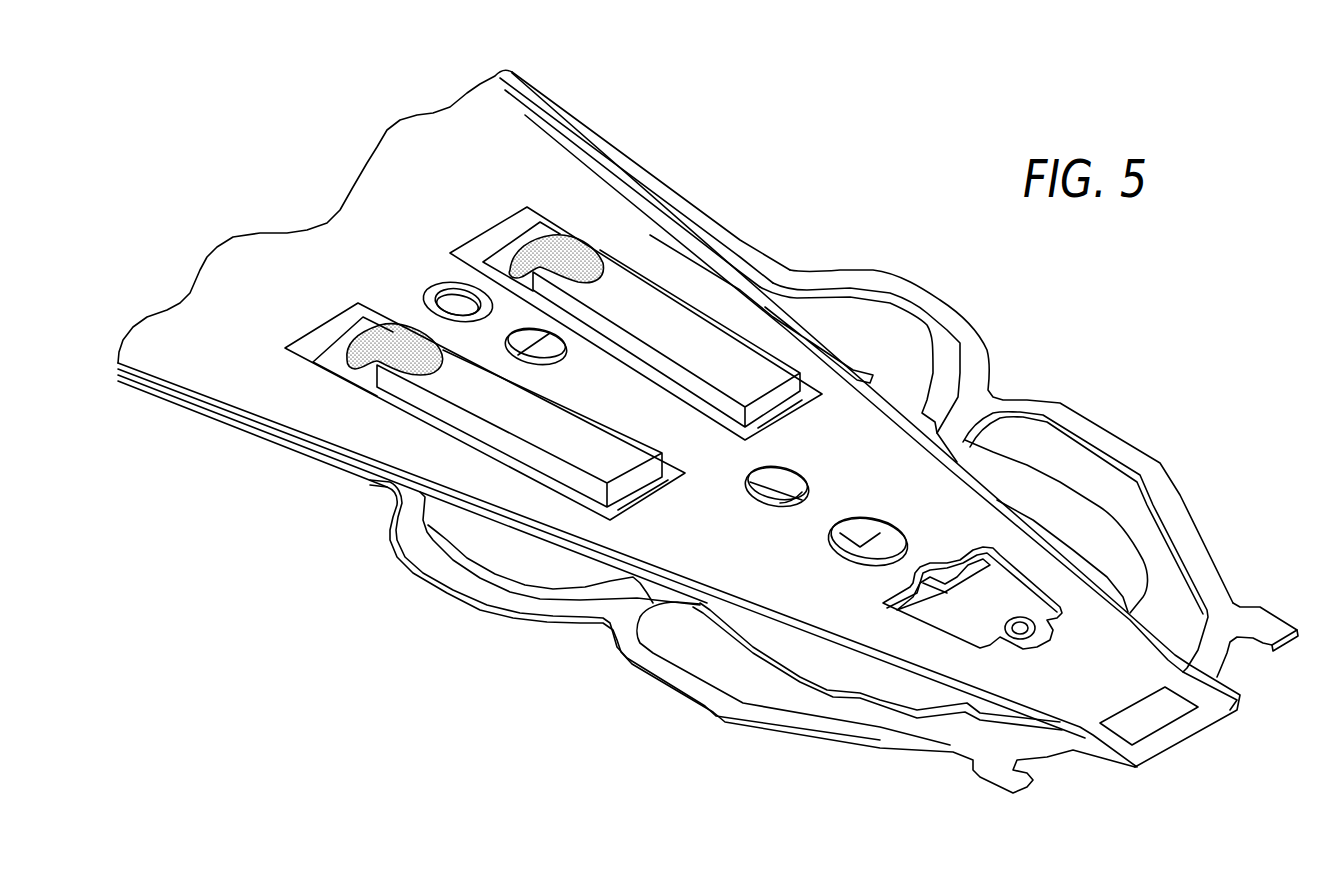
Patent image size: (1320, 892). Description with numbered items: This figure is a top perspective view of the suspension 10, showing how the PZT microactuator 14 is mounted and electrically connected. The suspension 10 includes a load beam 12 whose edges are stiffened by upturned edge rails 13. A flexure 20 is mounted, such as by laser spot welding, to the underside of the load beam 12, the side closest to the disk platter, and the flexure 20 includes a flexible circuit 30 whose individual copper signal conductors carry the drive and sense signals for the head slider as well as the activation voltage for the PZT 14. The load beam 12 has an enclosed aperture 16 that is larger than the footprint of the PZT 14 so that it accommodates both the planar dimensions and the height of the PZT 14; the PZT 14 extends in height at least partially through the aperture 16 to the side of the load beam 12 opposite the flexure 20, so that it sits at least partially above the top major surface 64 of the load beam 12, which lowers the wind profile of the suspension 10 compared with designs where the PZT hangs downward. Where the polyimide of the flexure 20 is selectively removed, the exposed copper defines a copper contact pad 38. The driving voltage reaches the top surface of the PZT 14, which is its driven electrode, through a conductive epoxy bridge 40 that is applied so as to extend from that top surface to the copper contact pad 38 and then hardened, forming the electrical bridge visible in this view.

The suspension 10 is at (1190, 373).
The load beam 12 is at (383, 253).
The upturned edge rails 13 is at (550, 105).
The PZT microactuator 14 is at (672, 320).
The aperture 16 is at (748, 430).
The flexure 20 is at (550, 653).
The flexible circuit 30 is at (855, 317).
The copper contact pad 38 is at (493, 263).
The conductive epoxy bridge 40 is at (572, 252).
The top major surface 64 is at (253, 380).